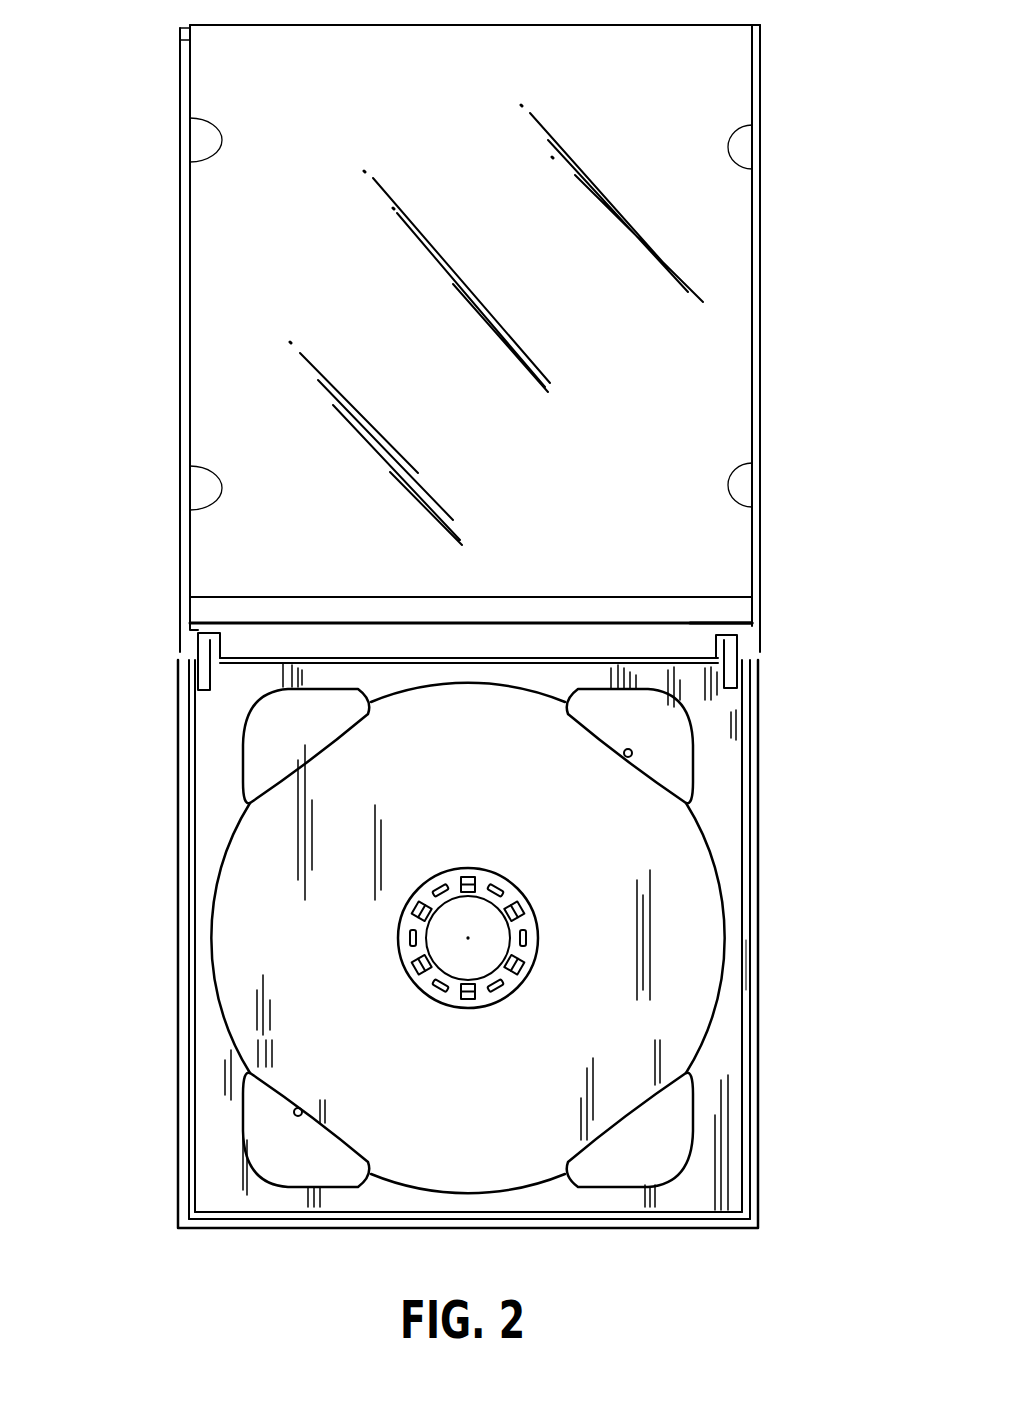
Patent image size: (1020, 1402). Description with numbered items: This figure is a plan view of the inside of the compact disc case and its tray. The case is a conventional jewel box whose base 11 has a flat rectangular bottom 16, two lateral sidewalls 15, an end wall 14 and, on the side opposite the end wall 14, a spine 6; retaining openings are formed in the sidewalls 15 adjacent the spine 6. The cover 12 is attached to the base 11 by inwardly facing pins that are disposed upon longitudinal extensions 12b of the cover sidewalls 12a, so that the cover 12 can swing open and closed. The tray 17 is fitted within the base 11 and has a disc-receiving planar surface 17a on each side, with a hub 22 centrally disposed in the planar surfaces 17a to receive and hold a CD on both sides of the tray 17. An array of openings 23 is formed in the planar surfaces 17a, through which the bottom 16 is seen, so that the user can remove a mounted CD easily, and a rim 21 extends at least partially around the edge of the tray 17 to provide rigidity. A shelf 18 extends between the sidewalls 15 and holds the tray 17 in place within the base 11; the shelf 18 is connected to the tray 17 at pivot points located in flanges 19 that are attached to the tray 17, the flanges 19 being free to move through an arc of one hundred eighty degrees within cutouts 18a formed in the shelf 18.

The base 11 is at (162, 996).
The cover 12 is at (770, 298).
The sidewalls 12a is at (178, 360).
The longitudinal extensions 12b is at (178, 632).
The spine 6 is at (598, 625).
The end wall 14 is at (320, 1228).
The sidewalls 15 is at (178, 856).
The bottom 16 is at (665, 747).
The tray 17 is at (703, 915).
The disc-receiving planar surface 17a is at (515, 1113).
The shelf 18 is at (505, 640).
The cutouts 18a is at (700, 625).
The flanges 19 is at (208, 664).
The rim 21 is at (748, 965).
The hub 22 is at (541, 962).
The openings 23 is at (624, 756).